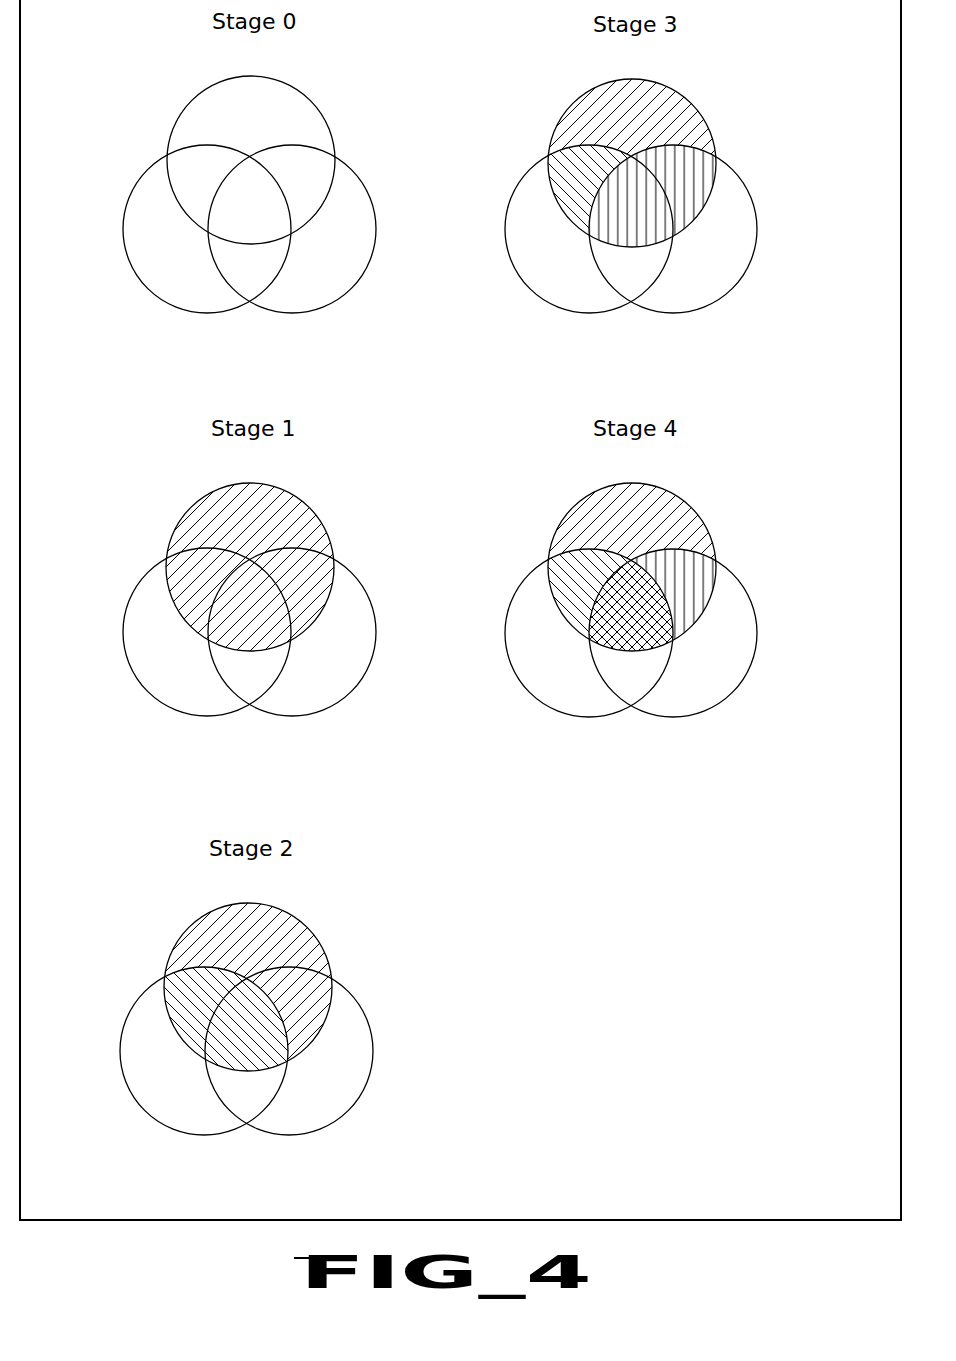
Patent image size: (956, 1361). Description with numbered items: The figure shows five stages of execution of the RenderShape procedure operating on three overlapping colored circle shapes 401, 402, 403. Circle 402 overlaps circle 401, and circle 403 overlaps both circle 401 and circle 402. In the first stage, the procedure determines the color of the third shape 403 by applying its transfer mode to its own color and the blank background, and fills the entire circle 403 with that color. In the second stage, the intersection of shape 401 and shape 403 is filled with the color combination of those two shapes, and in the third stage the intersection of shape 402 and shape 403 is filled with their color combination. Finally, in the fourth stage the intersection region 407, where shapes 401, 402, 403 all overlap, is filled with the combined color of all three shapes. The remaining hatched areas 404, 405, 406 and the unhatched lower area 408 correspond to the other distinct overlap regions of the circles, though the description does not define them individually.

The circle shape 401 is at (380, 640).
The circle shape 402 is at (508, 640).
The circle shape 403 is at (451, 565).
The region of third set only 404 is at (435, 569).
The intersection of first and third sets 405 is at (406, 575).
The intersection of second and third sets 406 is at (476, 575).
The intersection region 407 is at (440, 627).
The intersection of first and second sets 408 is at (469, 728).